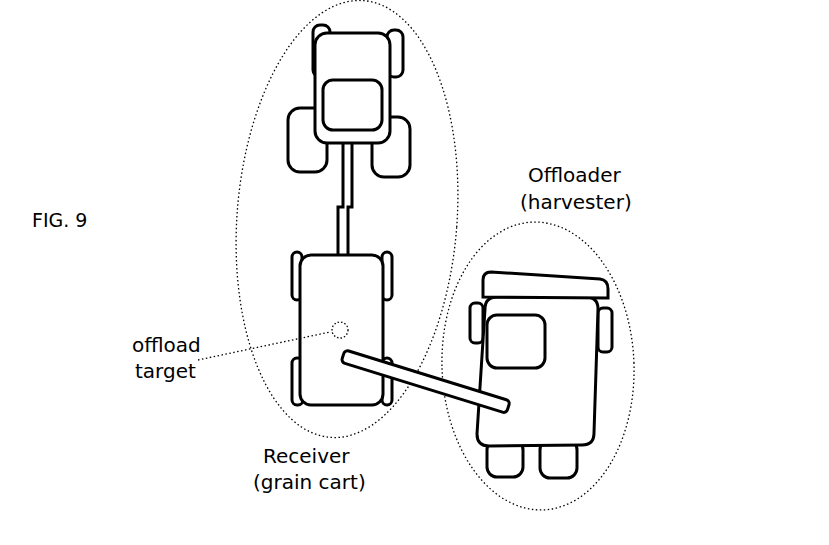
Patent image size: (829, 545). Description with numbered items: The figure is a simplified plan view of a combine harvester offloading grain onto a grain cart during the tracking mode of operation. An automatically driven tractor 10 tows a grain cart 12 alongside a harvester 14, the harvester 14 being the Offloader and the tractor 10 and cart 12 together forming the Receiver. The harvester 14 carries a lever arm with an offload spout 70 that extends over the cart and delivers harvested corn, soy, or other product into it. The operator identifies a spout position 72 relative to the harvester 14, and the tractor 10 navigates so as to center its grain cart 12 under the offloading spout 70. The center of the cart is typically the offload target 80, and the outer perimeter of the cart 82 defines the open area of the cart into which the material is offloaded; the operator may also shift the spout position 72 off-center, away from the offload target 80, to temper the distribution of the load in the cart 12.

The tractor 10 is at (330, 65).
The grain cart 12 is at (277, 347).
The harvester 14 is at (595, 398).
The offload spout 70 is at (430, 393).
The spout position 72 is at (337, 354).
The offload target 80 is at (340, 322).
The outer perimeter of the cart 82 is at (366, 253).